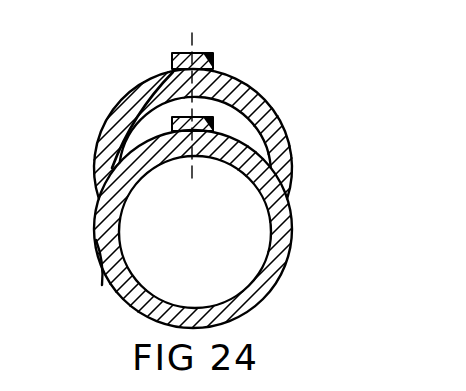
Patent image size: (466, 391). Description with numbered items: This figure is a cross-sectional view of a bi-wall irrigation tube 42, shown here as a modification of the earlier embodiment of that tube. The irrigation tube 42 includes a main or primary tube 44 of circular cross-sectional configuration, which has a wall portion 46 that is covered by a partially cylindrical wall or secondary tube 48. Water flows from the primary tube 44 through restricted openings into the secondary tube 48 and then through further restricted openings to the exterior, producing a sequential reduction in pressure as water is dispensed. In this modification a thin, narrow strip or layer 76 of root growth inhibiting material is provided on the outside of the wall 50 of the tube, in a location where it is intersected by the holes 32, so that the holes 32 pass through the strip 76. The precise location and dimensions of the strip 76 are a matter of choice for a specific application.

The holes 32 is at (211, 70).
The irrigation tube 42 is at (330, 239).
The main or primary tube 44 is at (270, 293).
The wall portion 46 is at (140, 178).
The partially cylindrical wall or secondary tube 48 is at (283, 122).
The wall 50 is at (88, 260).
The strip or layer 76 is at (172, 124).